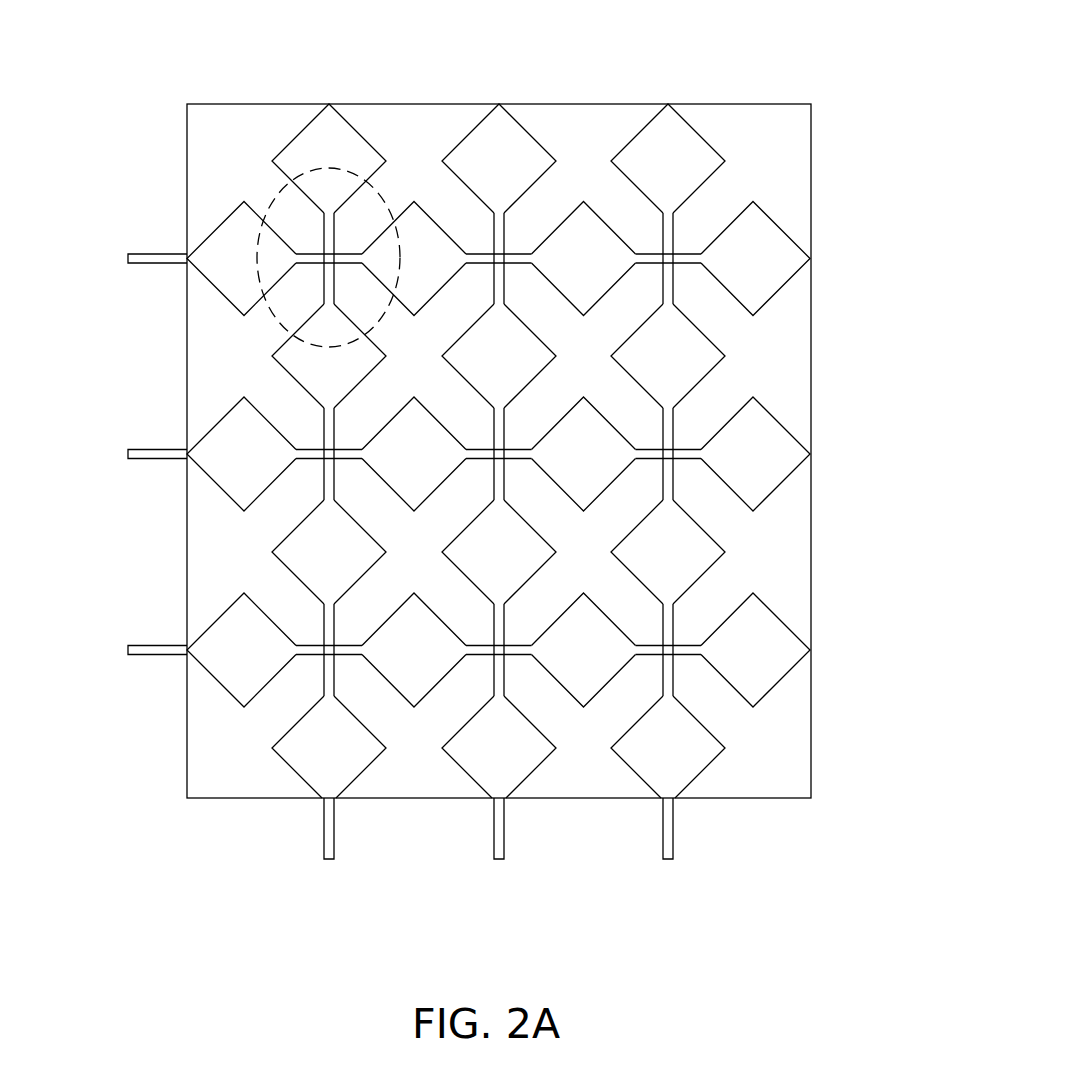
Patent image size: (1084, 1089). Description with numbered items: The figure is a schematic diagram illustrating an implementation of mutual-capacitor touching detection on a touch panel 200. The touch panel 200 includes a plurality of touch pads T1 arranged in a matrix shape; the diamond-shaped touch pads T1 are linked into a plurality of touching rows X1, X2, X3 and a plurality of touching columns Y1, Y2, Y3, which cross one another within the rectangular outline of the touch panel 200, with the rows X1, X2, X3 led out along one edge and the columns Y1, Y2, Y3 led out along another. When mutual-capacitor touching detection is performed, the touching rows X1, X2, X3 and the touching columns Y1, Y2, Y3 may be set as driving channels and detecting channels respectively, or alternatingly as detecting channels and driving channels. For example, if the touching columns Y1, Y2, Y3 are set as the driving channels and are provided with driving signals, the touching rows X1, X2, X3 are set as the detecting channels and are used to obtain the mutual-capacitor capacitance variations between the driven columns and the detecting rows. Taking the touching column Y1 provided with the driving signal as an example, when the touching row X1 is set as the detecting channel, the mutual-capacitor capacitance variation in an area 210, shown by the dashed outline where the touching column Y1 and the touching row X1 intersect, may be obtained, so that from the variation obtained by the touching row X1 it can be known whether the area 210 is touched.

The touch panel 200 is at (811, 768).
The area 210 is at (277, 193).
The touch pads T1 is at (476, 472).
The touching row X1 is at (329, 500).
The touching row X2 is at (499, 500).
The touching row X3 is at (668, 500).
The touching column Y1 is at (451, 259).
The touching column Y2 is at (451, 454).
The touching column Y3 is at (451, 650).